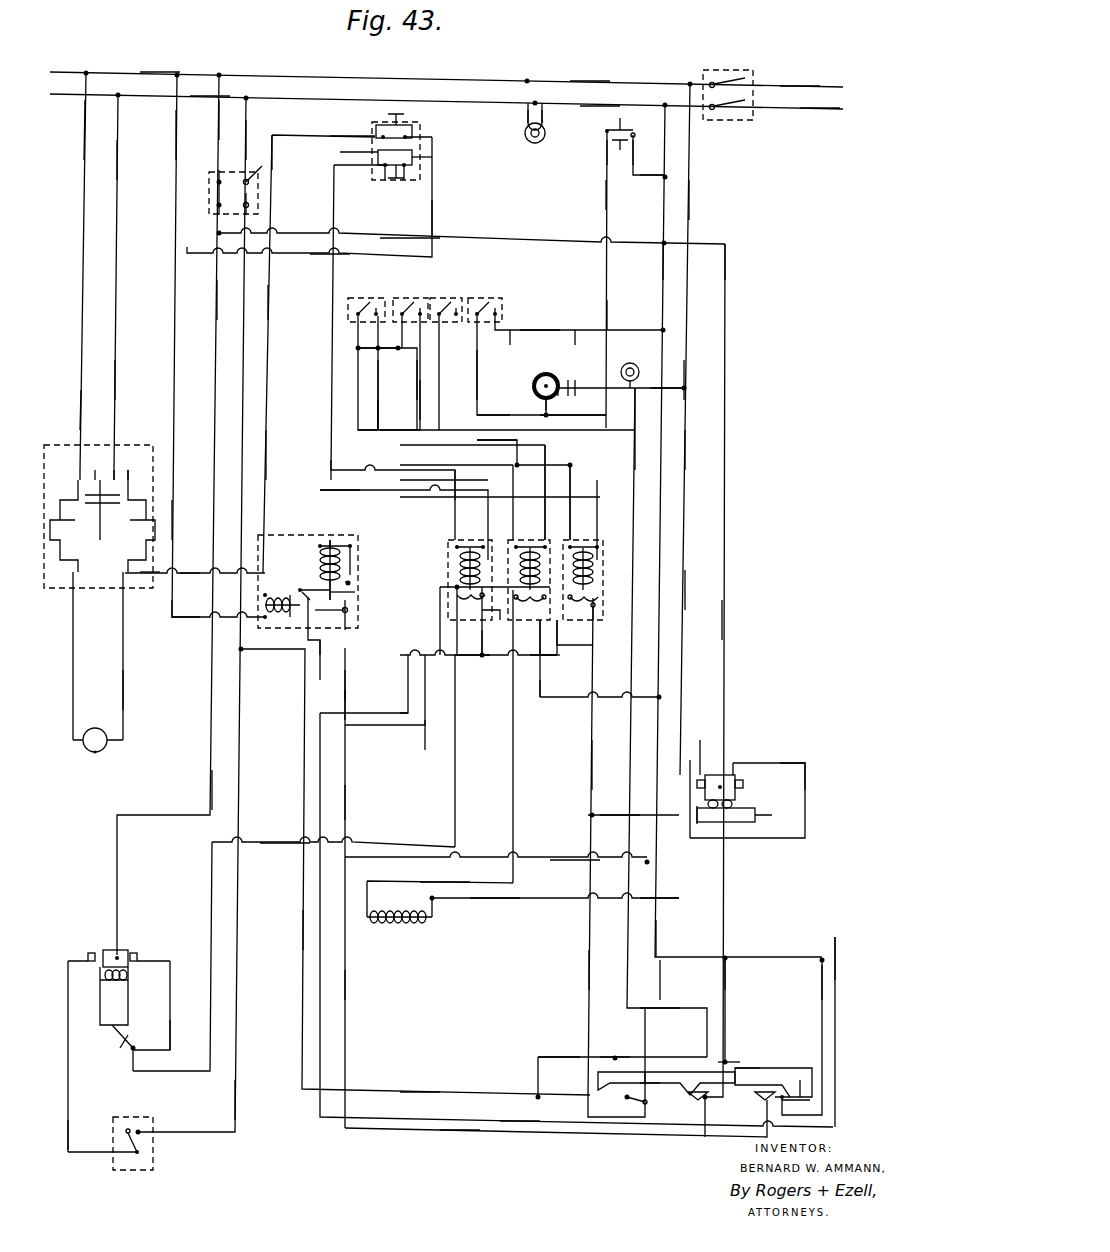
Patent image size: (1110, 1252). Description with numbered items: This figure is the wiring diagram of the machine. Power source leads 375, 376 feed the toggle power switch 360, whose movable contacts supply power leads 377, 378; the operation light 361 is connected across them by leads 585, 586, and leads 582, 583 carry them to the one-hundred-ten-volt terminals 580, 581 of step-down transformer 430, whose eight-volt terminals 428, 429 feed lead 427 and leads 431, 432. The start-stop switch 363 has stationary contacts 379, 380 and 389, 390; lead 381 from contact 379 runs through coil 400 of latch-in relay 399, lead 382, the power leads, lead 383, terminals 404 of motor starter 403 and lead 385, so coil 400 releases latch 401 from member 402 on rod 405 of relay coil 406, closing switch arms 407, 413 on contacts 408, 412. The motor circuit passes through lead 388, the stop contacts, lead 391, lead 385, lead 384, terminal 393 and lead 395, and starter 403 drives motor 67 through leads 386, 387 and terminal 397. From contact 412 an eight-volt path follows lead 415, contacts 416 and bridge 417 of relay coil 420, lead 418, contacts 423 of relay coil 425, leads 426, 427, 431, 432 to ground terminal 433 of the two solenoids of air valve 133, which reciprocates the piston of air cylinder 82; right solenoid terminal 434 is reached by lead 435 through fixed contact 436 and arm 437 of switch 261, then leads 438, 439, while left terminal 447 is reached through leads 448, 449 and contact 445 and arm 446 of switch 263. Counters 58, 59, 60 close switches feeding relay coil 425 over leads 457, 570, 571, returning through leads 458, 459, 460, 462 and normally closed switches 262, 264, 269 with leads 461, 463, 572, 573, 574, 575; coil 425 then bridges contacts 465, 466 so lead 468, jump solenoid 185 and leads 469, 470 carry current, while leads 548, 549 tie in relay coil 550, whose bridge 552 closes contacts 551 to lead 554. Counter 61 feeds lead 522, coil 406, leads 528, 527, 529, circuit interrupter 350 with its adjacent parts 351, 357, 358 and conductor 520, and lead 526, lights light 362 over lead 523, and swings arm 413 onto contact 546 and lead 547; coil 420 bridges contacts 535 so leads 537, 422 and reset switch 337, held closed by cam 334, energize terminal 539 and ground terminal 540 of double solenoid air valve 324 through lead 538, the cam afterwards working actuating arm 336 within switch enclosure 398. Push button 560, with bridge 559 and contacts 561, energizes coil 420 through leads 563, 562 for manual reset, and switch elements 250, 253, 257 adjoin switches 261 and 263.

The power supply line 377 is at (160, 72).
The power supply line 378 is at (205, 94).
The main switch 360 is at (746, 63).
The supply line 375 is at (795, 86).
The supply line 376 is at (820, 109).
The motor lead 384 is at (84, 130).
The conductor 382 is at (174, 135).
The conductor 582 is at (219, 118).
The conductor 583 is at (247, 140).
The conductor 381 is at (272, 145).
The conductor 379 is at (365, 137).
The push button station 363 is at (438, 126).
The start button contact 380 is at (412, 137).
The signal lamp 585 is at (524, 133).
The contact 560 is at (621, 123).
The contact 559 is at (634, 132).
The motor lead 383 is at (116, 160).
The transformer 430 is at (219, 166).
The contact 581 is at (262, 166).
The conductor 388 is at (334, 173).
The stop button contact 389 is at (385, 168).
The conductor 391 is at (432, 157).
The conductor 586 is at (545, 135).
The conductor 361 is at (535, 145).
The conductor 561 is at (607, 150).
The conductor 580 is at (219, 182).
The transformer terminal 429 is at (219, 205).
The transformer terminal 428 is at (258, 205).
The stop button contact 390 is at (402, 172).
The conductor 385 is at (432, 215).
The conductor 563 is at (606, 195).
The conductor 562 is at (655, 180).
The conductor 460 is at (690, 200).
The conductor 431 is at (219, 233).
The conductor 432 is at (410, 237).
The conductor 462 is at (662, 260).
The limit switch 58 is at (361, 290).
The limit switch 59 is at (406, 292).
The limit switch 60 is at (444, 292).
The limit switch 61 is at (485, 292).
The conductor 522 is at (540, 330).
The contact 351 is at (570, 380).
The conductor 457 is at (358, 348).
The conductor 526 is at (520, 345).
The signal lamp 350 is at (552, 365).
The signal lamp 362 is at (632, 363).
The conductor 523 is at (685, 375).
The conductor 570 is at (379, 372).
The conductor 571 is at (418, 372).
The conductor 520 is at (477, 372).
The lamp socket 357 is at (533, 386).
The conductor 575 is at (420, 395).
The conductor 527 is at (490, 415).
The contact 358 is at (560, 390).
The conductor 529 is at (560, 415).
The motor reversing contactor 393 is at (80, 460).
The contactor armature 403 is at (129, 439).
The contactor contacts 404 is at (130, 470).
The conductor 463 is at (378, 415).
The conductor 427 is at (268, 455).
The conductor 573 is at (395, 432).
The conductor 548 is at (540, 440).
The conductor 458 is at (545, 497).
The conductor 459 is at (570, 497).
The conductor 528 is at (320, 490).
The relay 399 is at (304, 528).
The relay 420 is at (455, 533).
The conductor 418 is at (495, 560).
The relay 425 is at (534, 538).
The relay 550 is at (587, 538).
The conductor 549 is at (603, 560).
The contactor lead 397 is at (160, 560).
The contactor lead 395 is at (190, 573).
The relay coil 406 is at (320, 555).
The conductor 405 is at (360, 560).
The relay armature 408 is at (319, 574).
The relay contact 402 is at (300, 595).
The conductor 416 is at (360, 582).
The relay contact 407 is at (355, 592).
The relay contact 412 is at (345, 610).
The relay coil 400 is at (275, 617).
The relay coil lead 401 is at (290, 612).
The conductor 413 is at (345, 620).
The conductor 415 is at (380, 620).
The conductor 417 is at (445, 610).
The relay contact 535 is at (470, 592).
The relay contact 552 is at (600, 610).
The conductor 423 is at (500, 615).
The conductor 465 is at (482, 650).
The conductor 466 is at (540, 640).
The conductor 551 is at (585, 615).
The conductor 554 is at (560, 655).
The conductor 546 is at (320, 650).
The conductor 422 is at (470, 656).
The conductor 426 is at (545, 656).
The conductor 537 is at (460, 713).
The conductor 547 is at (345, 700).
The motor lead 387 is at (123, 690).
The conductor 468 is at (425, 738).
The conductor 470 is at (540, 700).
The motor 386 is at (73, 730).
The motor shaft 67 is at (95, 752).
The conductor 449 is at (592, 765).
The conductor 433 is at (700, 745).
The conductor 447 is at (690, 765).
The solenoid valve unit 133 is at (741, 753).
The solenoid valve housing 435 is at (790, 763).
The solenoid 434 is at (737, 785).
The valve 82 is at (767, 813).
The conductor 448 is at (627, 812).
The solenoid coil 185 is at (390, 925).
The conductor 469 is at (685, 590).
The conductor 572 is at (835, 945).
The conductor 461 is at (725, 960).
The conductor 574 is at (822, 980).
The relay armature 540 is at (110, 950).
The relay 324 is at (139, 945).
The relay contact 539 is at (140, 957).
The conductor 439 is at (302, 930).
The conductor 538 is at (170, 1035).
The switch blade 334 is at (118, 1042).
The switch contact 337 is at (124, 1067).
The switch 336 is at (135, 1125).
The switch 398 is at (110, 1169).
The conductor 438 is at (540, 1057).
The contact 261 is at (618, 1048).
The cam follower 436 is at (650, 1070).
The contact 437 is at (650, 1075).
The contact 263 is at (650, 1085).
The contact 262 is at (730, 1053).
The cam 250 is at (740, 1068).
The cam 253 is at (770, 1068).
The cam lobe 257 is at (790, 1093).
The switch 445 is at (640, 1100).
The switch contact 446 is at (648, 1103).
The switch 269 is at (760, 1107).
The switch 264 is at (688, 1113).